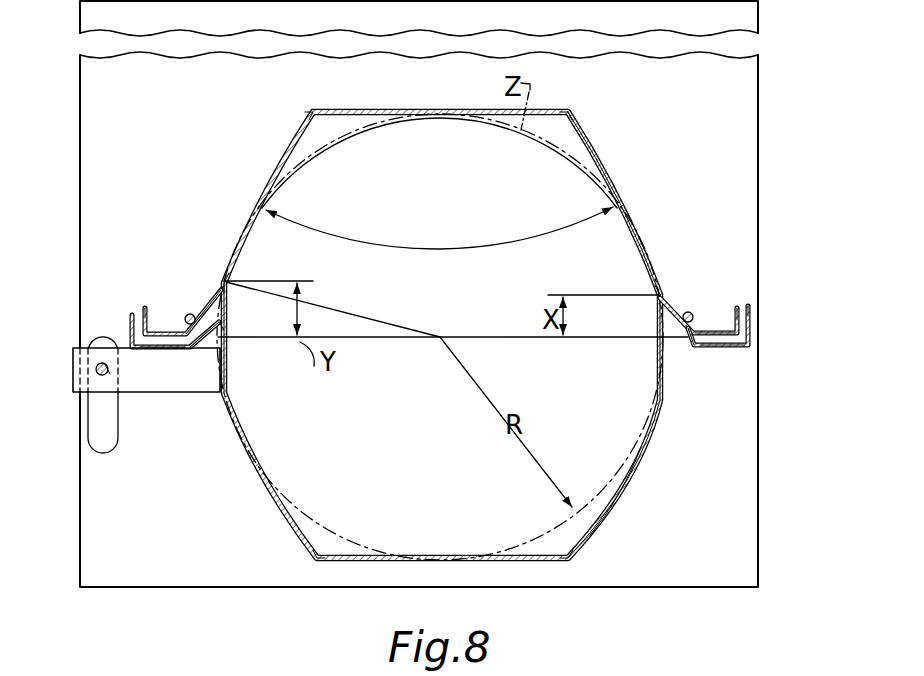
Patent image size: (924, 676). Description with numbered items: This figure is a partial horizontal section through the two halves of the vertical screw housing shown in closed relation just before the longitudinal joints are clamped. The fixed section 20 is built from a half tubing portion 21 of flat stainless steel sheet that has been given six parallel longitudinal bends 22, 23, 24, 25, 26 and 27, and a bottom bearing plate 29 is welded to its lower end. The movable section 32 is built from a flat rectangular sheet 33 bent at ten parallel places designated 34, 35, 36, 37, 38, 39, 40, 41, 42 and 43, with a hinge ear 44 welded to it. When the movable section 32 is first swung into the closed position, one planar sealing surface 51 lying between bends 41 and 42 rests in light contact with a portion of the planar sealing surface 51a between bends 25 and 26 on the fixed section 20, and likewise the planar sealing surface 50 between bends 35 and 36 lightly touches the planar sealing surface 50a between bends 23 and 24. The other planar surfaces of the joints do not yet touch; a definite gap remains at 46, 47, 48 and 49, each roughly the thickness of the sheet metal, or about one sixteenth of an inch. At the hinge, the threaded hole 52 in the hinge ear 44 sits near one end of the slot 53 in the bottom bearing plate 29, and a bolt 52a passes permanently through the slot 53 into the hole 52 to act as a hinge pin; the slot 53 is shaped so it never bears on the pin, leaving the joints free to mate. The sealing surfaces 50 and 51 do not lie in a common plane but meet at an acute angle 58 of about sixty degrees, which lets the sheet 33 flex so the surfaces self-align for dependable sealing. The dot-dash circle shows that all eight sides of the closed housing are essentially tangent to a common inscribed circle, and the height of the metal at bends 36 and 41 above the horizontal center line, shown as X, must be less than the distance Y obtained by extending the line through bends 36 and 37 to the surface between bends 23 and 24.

The fixed section 20 is at (607, 163).
The half tubing portion 21 is at (628, 222).
The bend 22 is at (160, 330).
The bend 23 is at (185, 330).
The bend 24 is at (313, 110).
The bend 25 is at (569, 112).
The bend 26 is at (695, 328).
The bend 27 is at (736, 326).
The bottom bearing plate 29 is at (752, 452).
The movable section 32 is at (610, 511).
The flat rectangular sheet 33 is at (620, 487).
The bend 34 is at (131, 342).
The bend 35 is at (197, 352).
The bend 36 is at (229, 284).
The bend 37 is at (229, 386).
The bend 38 is at (318, 553).
The bend 39 is at (567, 552).
The bend 40 is at (656, 398).
The bend 41 is at (657, 293).
The bend 42 is at (691, 348).
The bend 43 is at (751, 340).
The hinge ear 44 is at (184, 396).
The gap 46 is at (143, 305).
The gap 47 is at (158, 349).
The gap 48 is at (718, 347).
The gap 49 is at (751, 303).
The planar sealing surface 50 is at (196, 314).
The planar sealing surface 50a is at (228, 328).
The planar sealing surface 51 is at (680, 316).
The planar sealing surface 51a is at (684, 334).
The threaded hole 52 is at (110, 374).
The bolt 52a is at (97, 367).
The slot 53 is at (89, 428).
The angle 58 is at (481, 246).